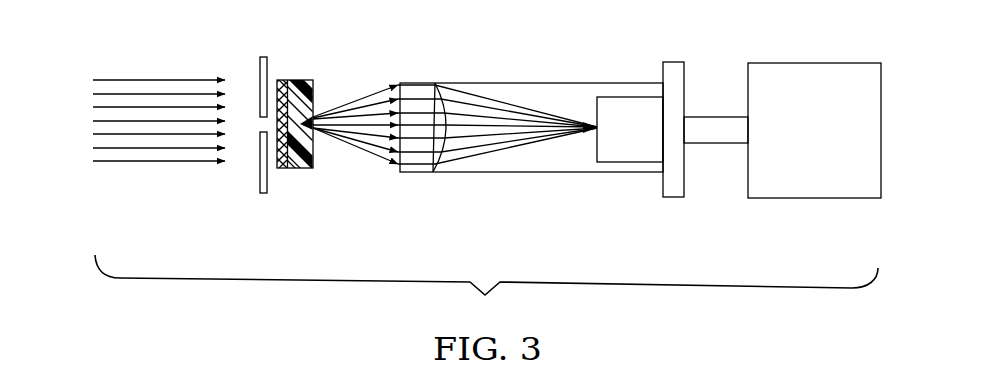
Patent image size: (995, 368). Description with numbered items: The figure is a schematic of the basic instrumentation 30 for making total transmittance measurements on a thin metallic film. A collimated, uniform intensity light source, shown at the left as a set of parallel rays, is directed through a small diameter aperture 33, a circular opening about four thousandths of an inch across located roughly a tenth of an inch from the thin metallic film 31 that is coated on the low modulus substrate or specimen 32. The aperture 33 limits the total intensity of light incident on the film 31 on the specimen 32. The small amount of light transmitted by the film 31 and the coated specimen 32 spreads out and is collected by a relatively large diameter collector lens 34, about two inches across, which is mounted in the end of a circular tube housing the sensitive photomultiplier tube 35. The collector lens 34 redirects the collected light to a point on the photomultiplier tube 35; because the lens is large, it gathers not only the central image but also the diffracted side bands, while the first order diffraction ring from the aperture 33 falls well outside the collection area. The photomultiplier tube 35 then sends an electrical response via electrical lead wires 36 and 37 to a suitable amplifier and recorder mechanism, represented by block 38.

The basic instrumentation for making total transmittance measurements 30 is at (243, 62).
The thin metallic film 31 is at (287, 80).
The specimen 32 is at (318, 157).
The aperture 33 is at (263, 121).
The collector lens 34 is at (420, 83).
The photomultiplier tube 35 is at (644, 140).
The electrical lead wire 36 is at (720, 117).
The electrical lead wire 37 is at (713, 144).
The amplifier and recorder mechanism 38 is at (830, 138).